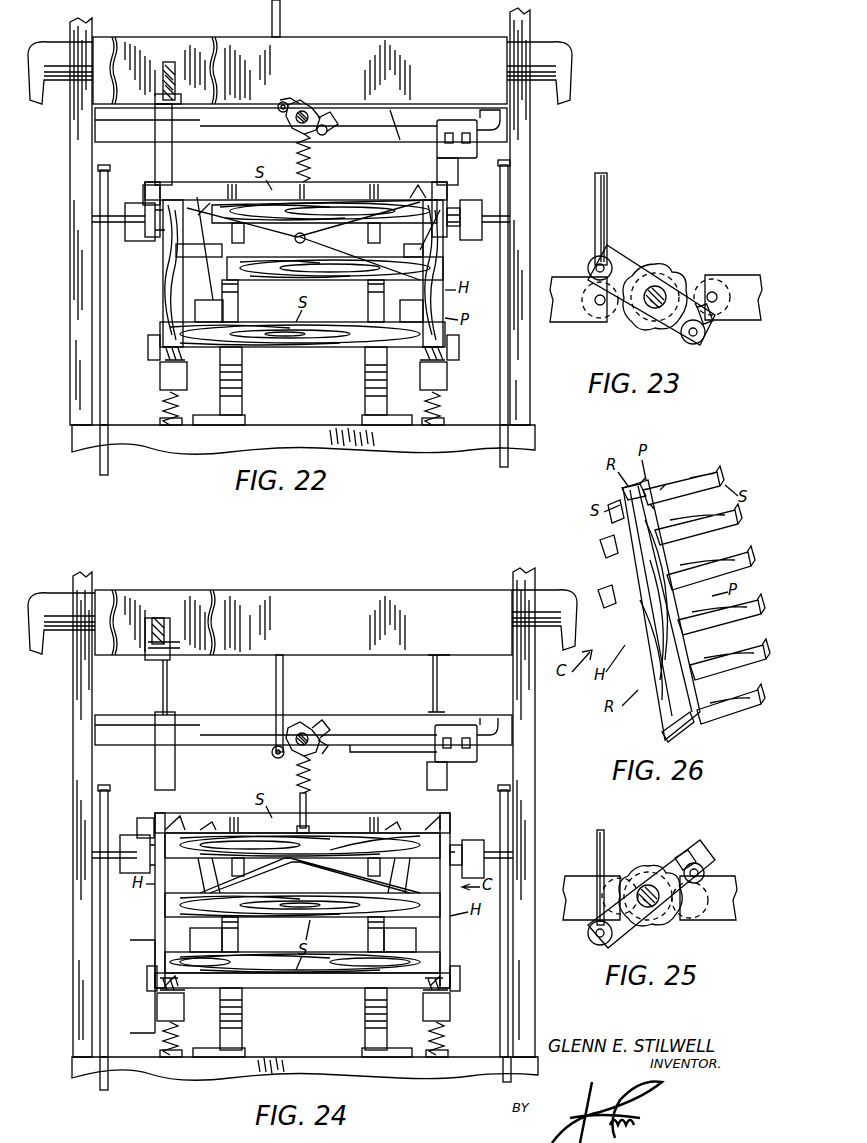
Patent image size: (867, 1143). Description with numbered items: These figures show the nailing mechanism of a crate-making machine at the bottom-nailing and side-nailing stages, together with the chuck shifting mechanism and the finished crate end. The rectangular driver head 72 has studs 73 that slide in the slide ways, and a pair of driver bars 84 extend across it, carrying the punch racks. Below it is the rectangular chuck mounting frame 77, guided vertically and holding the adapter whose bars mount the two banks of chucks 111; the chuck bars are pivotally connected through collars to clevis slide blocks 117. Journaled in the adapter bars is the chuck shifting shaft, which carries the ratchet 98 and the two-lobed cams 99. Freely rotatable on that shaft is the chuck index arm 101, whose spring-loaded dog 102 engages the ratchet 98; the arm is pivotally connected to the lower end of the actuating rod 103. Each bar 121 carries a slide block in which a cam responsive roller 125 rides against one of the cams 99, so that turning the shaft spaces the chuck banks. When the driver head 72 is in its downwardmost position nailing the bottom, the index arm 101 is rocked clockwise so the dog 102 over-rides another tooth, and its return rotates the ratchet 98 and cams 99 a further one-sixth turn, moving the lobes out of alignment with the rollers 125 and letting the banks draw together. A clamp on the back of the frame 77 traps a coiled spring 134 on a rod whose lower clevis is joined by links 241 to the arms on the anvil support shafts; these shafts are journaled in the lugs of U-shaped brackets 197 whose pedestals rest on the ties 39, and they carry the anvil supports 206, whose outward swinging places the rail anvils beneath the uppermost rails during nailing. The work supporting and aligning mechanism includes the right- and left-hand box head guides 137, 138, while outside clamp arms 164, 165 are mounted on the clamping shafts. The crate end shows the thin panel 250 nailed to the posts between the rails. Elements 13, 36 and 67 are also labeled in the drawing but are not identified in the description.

In FIG. 24, the crate assembling structure 13 is at (147, 937).
In FIG. 22, the upright post 36 is at (70, 195).
In FIG. 24, the upright post 36 is at (73, 714).
In FIG. 22, the tie 39 is at (438, 447).
In FIG. 24, the tie 39 is at (448, 1078).
In FIG. 22, the guide rod 67 is at (100, 340).
In FIG. 24, the guide rod 67 is at (108, 902).
In FIG. 22, the driver head 72 is at (345, 84).
In FIG. 24, the driver head 72 is at (350, 636).
In FIG. 22, the stud 73 is at (540, 40).
In FIG. 24, the stud 73 is at (52, 592).
In FIG. 22, the chuck mounting frame 77 is at (380, 130).
In FIG. 24, the chuck mounting frame 77 is at (380, 720).
In FIG. 24, the driver bar 84 is at (158, 618).
In FIG. 23, the ratchet 98 is at (632, 322).
In FIG. 25, the ratchet 98 is at (672, 922).
In FIG. 23, the cam 99 is at (652, 330).
In FIG. 25, the cam 99 is at (650, 930).
In FIG. 22, the chuck index arm 101 is at (285, 125).
In FIG. 23, the chuck index arm 101 is at (625, 258).
In FIG. 25, the chuck index arm 101 is at (688, 845).
In FIG. 24, the chuck index arm 101 is at (314, 726).
In FIG. 23, the dog 102 is at (705, 340).
In FIG. 25, the dog 102 is at (704, 862).
In FIG. 22, the actuating rod 103 is at (280, 20).
In FIG. 23, the actuating rod 103 is at (607, 212).
In FIG. 25, the actuating rod 103 is at (606, 838).
In FIG. 24, the actuating rod 103 is at (284, 692).
In FIG. 22, the chuck 111 is at (172, 166).
In FIG. 24, the chuck 111 is at (175, 777).
In FIG. 22, the clevis slide block 117 is at (168, 83).
In FIG. 24, the clevis slide block 117 is at (168, 620).
In FIG. 23, the bar 121 is at (560, 277).
In FIG. 25, the bar 121 is at (737, 878).
In FIG. 23, the cam responsive roller 125 is at (704, 280).
In FIG. 25, the cam responsive roller 125 is at (620, 878).
In FIG. 22, the coiled spring 134 is at (348, 170).
In FIG. 24, the coiled spring 134 is at (297, 774).
In FIG. 22, the right-hand box head guide 137 is at (160, 372).
In FIG. 24, the right-hand box head guide 137 is at (157, 990).
In FIG. 22, the left-hand box head guide 138 is at (448, 372).
In FIG. 24, the left-hand box head guide 138 is at (450, 996).
In FIG. 22, the outside clamp arm 164 is at (128, 200).
In FIG. 24, the outside clamp arm 164 is at (123, 830).
In FIG. 22, the outside clamp arm 165 is at (466, 200).
In FIG. 24, the outside clamp arm 165 is at (476, 838).
In FIG. 22, the U-shaped bracket 197 is at (365, 368).
In FIG. 24, the U-shaped bracket 197 is at (365, 1000).
In FIG. 22, the anvil support 206 is at (165, 262).
In FIG. 24, the link 241 is at (330, 872).
In FIG. 26, the panel 250 is at (620, 575).